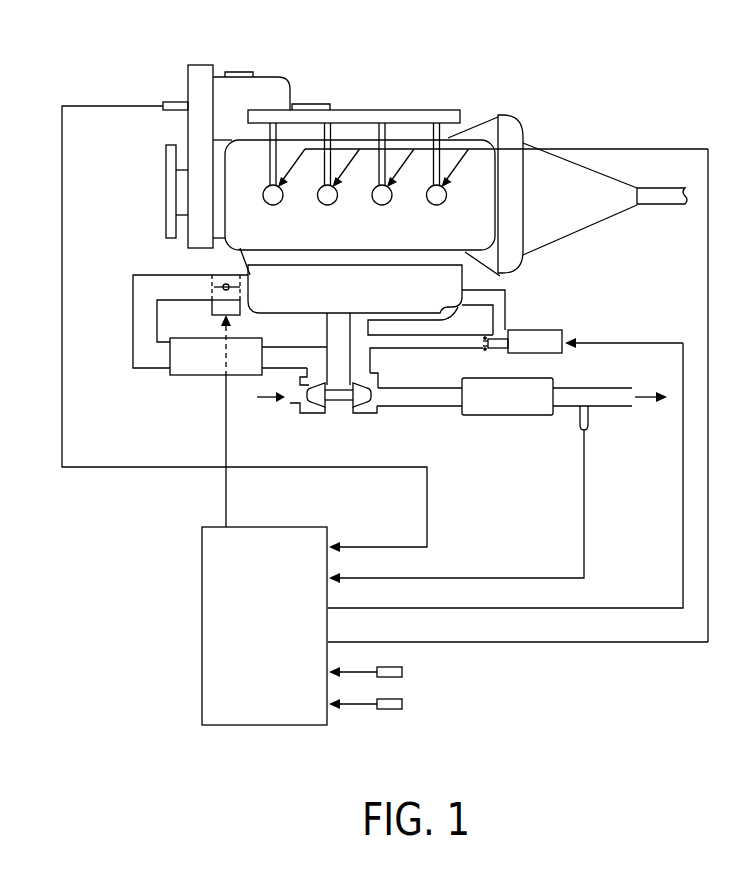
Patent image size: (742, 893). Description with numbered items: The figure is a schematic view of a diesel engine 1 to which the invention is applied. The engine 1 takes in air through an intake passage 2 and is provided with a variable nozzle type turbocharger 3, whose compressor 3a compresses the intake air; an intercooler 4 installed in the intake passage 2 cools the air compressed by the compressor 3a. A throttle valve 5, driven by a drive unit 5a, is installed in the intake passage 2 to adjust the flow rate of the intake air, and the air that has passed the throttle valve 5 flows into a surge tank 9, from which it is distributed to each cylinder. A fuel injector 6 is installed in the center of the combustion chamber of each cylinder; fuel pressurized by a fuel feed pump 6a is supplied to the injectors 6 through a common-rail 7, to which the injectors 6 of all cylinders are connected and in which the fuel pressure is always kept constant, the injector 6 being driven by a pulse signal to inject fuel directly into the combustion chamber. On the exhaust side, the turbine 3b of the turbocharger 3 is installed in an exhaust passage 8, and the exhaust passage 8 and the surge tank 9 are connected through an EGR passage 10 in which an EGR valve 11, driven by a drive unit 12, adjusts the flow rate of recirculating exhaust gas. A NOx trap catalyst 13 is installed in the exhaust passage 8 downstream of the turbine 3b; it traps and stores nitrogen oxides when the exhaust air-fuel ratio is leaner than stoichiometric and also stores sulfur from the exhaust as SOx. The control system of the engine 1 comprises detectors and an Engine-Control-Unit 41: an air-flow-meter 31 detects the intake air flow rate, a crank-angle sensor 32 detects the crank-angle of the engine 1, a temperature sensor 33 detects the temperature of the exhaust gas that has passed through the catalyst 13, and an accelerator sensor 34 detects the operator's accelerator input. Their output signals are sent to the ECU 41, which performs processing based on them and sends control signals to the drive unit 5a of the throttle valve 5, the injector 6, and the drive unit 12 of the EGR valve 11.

The diesel engine 1 is at (466, 64).
The intake passage 2 is at (133, 345).
The variable nozzle type turbocharger 3 is at (325, 389).
The compressor 3a is at (313, 415).
The turbine 3b is at (368, 416).
The intercooler 4 is at (192, 375).
The throttle valve 5 is at (226, 279).
The drive unit 5a is at (212, 307).
The fuel injector 6 is at (276, 205).
The fuel feed pump 6a is at (270, 77).
The common-rail 7 is at (417, 110).
The exhaust passage 8 is at (428, 407).
The surge tank 9 is at (255, 313).
The EGR passage 10 is at (508, 300).
The EGR valve 11 is at (494, 350).
The drive unit 12 is at (558, 330).
The NOx trap catalyst 13 is at (493, 415).
The air-flow-meter 31 is at (402, 674).
The crank-angle sensor 32 is at (170, 102).
The temperature sensor 33 is at (590, 418).
The accelerator sensor 34 is at (402, 705).
The Engine-Control-Unit (ECU) 41 is at (300, 725).